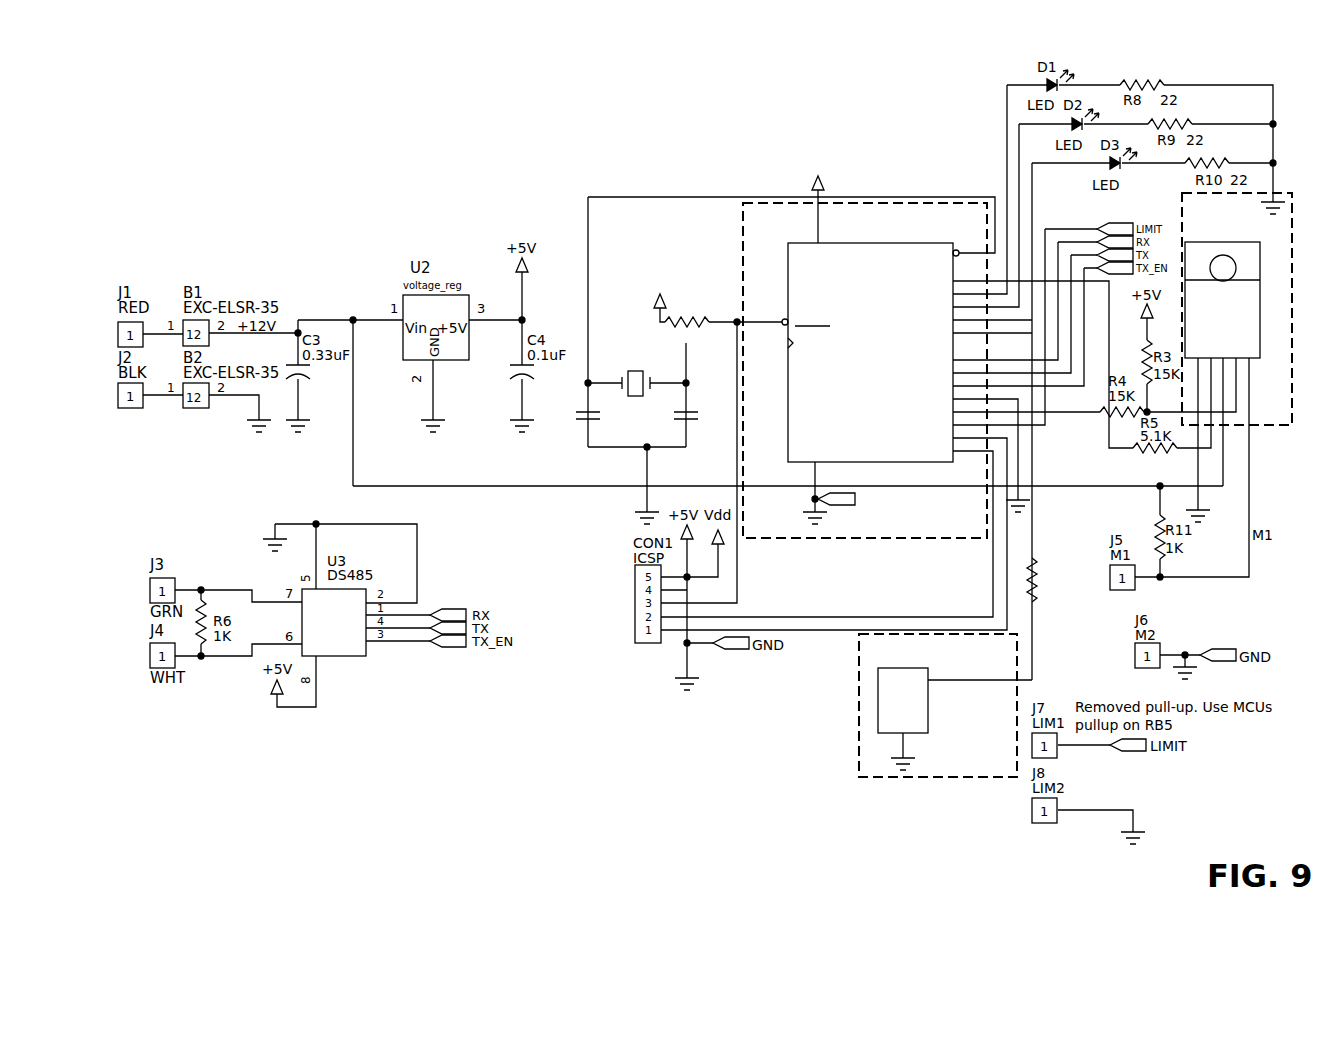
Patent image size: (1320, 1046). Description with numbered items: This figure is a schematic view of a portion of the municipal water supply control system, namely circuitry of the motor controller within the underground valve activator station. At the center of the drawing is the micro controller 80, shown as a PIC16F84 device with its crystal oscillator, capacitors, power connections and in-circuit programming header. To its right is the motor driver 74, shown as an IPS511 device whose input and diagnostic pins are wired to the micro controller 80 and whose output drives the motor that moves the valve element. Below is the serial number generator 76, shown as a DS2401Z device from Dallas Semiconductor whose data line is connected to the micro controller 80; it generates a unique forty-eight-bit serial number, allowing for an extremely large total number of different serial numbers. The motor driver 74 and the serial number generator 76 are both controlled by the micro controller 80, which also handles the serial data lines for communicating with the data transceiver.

The micro controller 80 is at (898, 205).
The motor driver 74 is at (1257, 194).
The serial number generator 76 is at (887, 779).